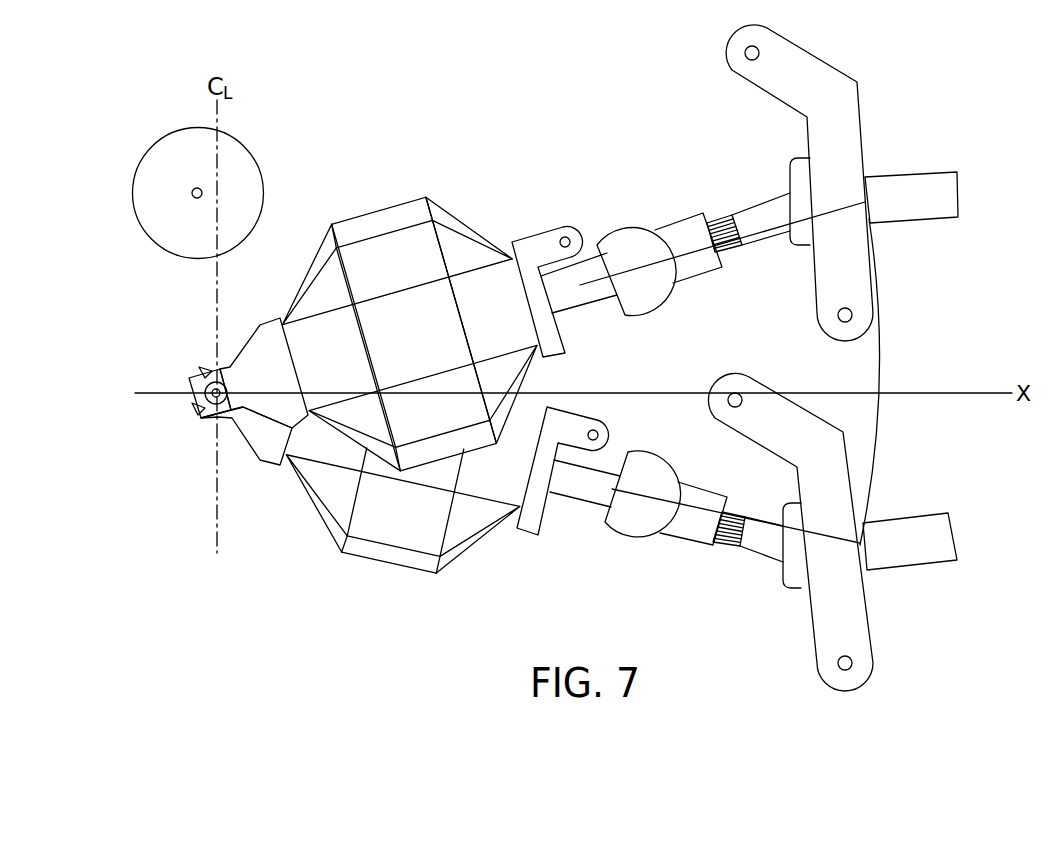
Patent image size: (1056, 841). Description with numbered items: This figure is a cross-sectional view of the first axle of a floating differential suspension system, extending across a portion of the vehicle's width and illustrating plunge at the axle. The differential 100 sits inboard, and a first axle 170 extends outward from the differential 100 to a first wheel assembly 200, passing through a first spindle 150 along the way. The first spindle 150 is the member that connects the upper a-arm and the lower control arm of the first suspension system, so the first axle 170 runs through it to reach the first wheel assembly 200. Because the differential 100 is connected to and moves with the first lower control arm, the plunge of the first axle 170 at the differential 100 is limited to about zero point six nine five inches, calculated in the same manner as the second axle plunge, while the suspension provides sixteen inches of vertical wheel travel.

The differential 100 is at (388, 248).
The first spindle 150 is at (818, 70).
The first axle 170 is at (787, 153).
The first wheel assembly 200 is at (917, 185).